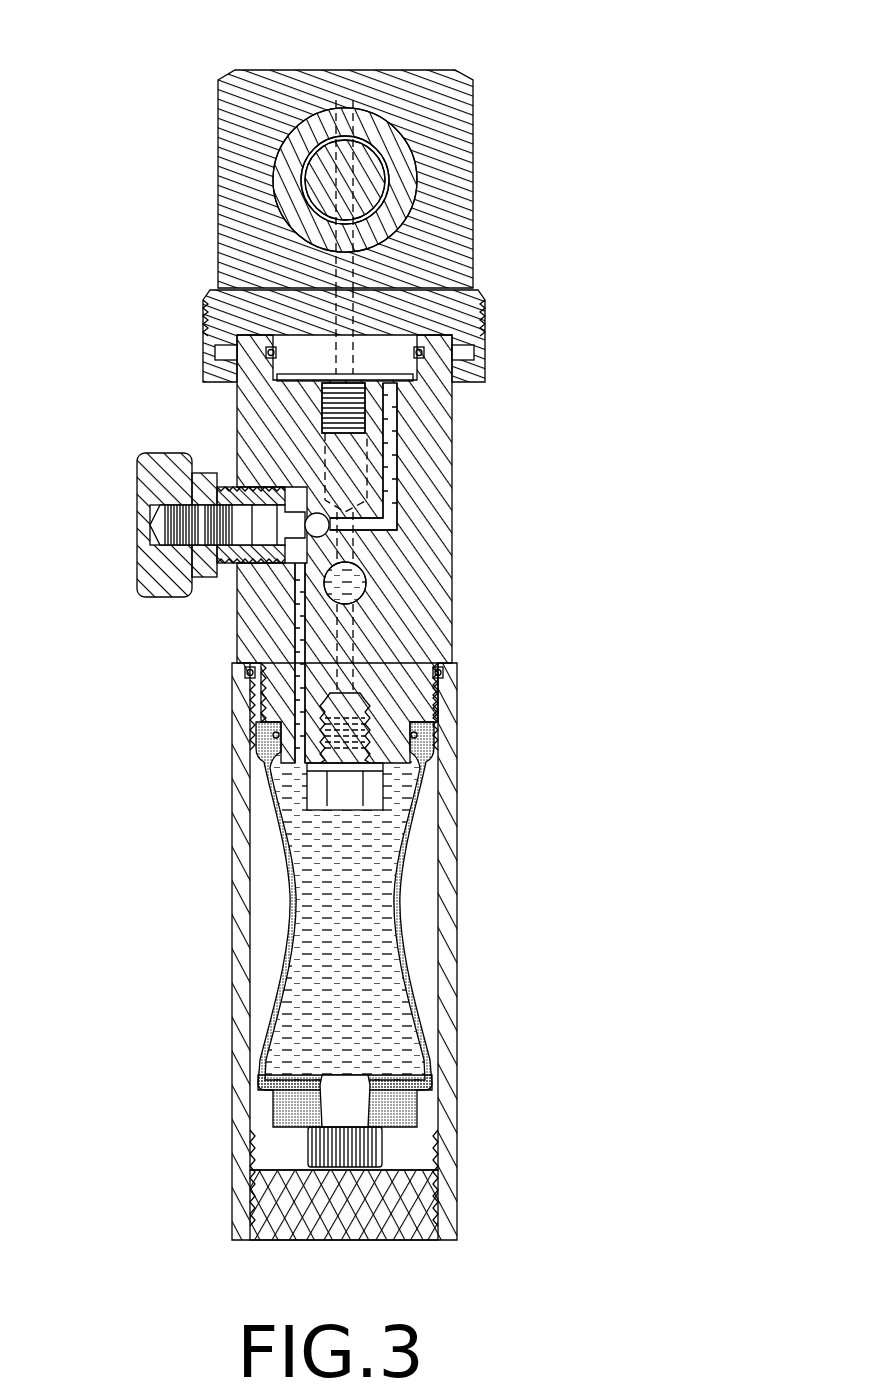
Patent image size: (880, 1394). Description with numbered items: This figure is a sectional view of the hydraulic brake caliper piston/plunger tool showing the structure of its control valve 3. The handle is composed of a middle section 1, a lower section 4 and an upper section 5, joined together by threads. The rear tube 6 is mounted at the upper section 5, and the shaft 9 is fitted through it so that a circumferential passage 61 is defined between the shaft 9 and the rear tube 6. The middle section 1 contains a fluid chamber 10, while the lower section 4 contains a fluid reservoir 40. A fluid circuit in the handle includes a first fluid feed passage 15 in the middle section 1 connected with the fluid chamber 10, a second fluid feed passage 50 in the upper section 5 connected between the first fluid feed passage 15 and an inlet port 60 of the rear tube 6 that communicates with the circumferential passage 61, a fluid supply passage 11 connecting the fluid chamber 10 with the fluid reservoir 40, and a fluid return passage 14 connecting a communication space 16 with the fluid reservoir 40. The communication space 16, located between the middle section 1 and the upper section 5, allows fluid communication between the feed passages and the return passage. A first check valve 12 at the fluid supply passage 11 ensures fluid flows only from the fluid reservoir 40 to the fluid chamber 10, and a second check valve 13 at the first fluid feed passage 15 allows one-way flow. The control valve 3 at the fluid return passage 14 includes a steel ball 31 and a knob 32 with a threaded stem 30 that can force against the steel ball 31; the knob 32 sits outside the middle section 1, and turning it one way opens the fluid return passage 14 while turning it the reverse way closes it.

The middle section 1 is at (453, 500).
The control valve 3 is at (203, 577).
The lower section 4 is at (457, 950).
The upper section 5 is at (405, 70).
The rear tube 6 is at (395, 152).
The shaft 9 is at (328, 177).
The fluid chamber 10 is at (366, 583).
The fluid supply passage 11 is at (357, 632).
The first check valve 12 is at (378, 722).
The second check valve 13 is at (322, 412).
The fluid return passage 14 is at (403, 445).
The first fluid feed passage 15 is at (330, 500).
The communication space 16 is at (363, 377).
The threaded stem 30 is at (258, 530).
The steel ball 31 is at (315, 530).
The knob 32 is at (152, 556).
The fluid reservoir 40 is at (400, 916).
The second fluid feed passage 50 is at (367, 290).
The inlet port 60 is at (345, 105).
The circumferential passage 61 is at (390, 180).